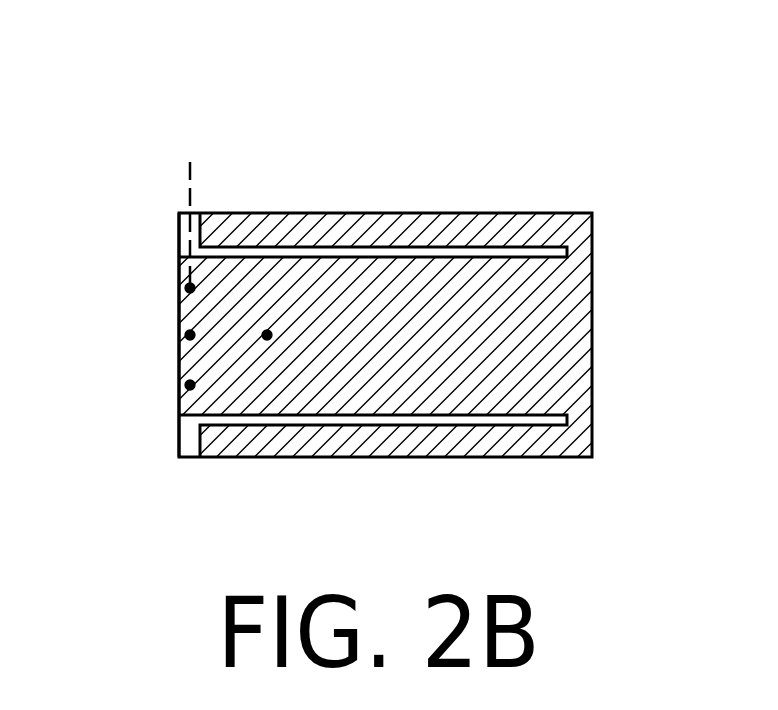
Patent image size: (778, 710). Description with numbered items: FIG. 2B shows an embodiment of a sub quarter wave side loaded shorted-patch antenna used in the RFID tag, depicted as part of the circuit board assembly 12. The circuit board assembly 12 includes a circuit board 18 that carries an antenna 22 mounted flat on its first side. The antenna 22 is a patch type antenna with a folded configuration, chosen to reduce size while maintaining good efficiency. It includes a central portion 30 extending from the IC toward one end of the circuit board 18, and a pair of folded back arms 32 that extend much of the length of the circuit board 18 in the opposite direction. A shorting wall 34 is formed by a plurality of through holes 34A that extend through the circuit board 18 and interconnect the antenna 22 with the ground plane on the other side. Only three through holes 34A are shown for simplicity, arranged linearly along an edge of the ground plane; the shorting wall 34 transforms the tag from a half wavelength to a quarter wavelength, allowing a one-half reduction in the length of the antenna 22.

The circuit board assembly 12 is at (268, 109).
The circuit board 18 is at (178, 450).
The antenna 22 is at (593, 300).
The central portion 30 is at (267, 335).
The folded back arms 32 is at (387, 228).
The shorting wall 34 is at (190, 181).
The through holes 34A is at (190, 288).